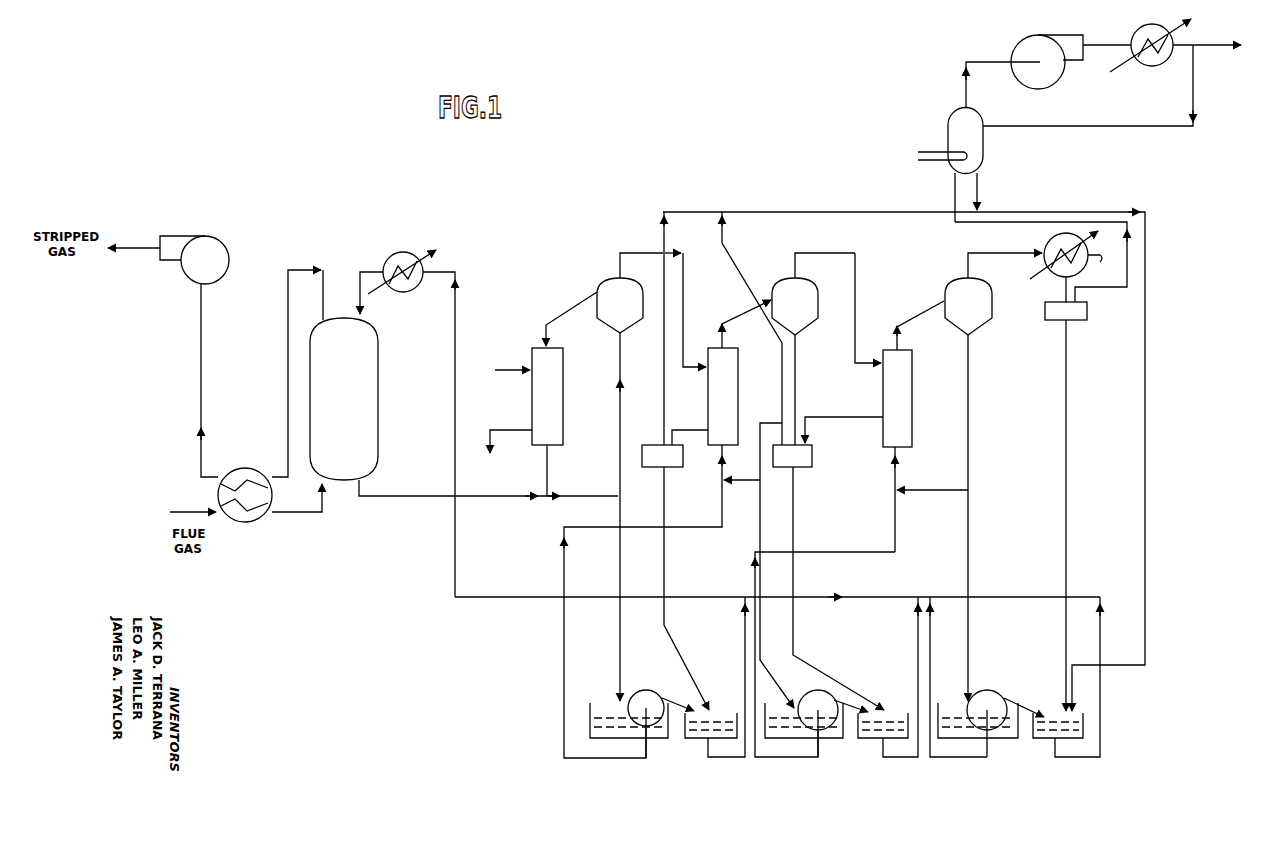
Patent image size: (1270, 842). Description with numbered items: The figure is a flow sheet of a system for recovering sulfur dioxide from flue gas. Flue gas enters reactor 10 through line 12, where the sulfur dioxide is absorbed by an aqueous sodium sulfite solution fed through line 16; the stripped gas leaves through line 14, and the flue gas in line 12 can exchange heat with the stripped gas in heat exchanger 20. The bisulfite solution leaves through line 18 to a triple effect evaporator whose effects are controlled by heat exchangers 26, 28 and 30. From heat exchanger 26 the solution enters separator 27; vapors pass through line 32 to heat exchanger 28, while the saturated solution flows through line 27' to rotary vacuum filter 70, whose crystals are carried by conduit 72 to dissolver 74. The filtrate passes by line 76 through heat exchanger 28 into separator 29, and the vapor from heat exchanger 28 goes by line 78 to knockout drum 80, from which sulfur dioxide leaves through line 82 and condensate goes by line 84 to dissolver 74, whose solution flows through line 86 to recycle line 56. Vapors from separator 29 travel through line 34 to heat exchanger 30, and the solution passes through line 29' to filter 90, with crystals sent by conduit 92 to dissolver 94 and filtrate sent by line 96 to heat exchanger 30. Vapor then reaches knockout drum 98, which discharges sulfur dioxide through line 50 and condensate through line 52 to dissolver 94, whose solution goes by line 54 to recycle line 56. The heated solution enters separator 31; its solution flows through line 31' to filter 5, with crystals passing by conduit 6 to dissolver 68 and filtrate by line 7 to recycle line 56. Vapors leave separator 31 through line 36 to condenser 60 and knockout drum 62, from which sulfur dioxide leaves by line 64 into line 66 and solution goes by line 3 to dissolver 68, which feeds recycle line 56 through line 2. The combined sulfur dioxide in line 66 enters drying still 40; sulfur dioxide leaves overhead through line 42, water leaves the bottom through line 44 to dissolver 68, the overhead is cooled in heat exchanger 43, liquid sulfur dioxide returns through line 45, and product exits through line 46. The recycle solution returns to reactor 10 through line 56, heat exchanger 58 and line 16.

The reactor 10 is at (378, 378).
The line 12 is at (304, 516).
The line 14 is at (288, 322).
The line 16 is at (360, 278).
The line 18 is at (360, 498).
The heat exchanger 20 is at (250, 468).
The heat exchanger 26 is at (563, 410).
The separator 27 is at (604, 303).
The line 27' is at (639, 517).
The heat exchanger 28 is at (738, 382).
The separator 29 is at (813, 303).
The line 29' is at (813, 390).
The heat exchanger 30 is at (912, 417).
The separator 31 is at (993, 294).
The line 31' is at (950, 518).
The line 32 is at (684, 311).
The line 34 is at (856, 308).
The line 36 is at (958, 254).
The drying still 40 is at (983, 140).
The line 42 is at (966, 90).
The heat exchanger 43 is at (1140, 26).
The line 44 is at (978, 192).
The line 45 is at (1082, 126).
The line 46 is at (1210, 44).
The line 50 is at (782, 400).
The line 52 is at (810, 668).
The line 54 is at (888, 760).
The recycle line 56 is at (886, 597).
The heat exchanger 58 is at (404, 252).
The condenser 60 is at (1074, 266).
The knockout drum 62 is at (1087, 316).
The line 64 is at (1127, 270).
The line 66 is at (856, 212).
The dissolver tank 68 is at (1052, 714).
The rotary vacuum filter 70 is at (628, 697).
The conduit 72 is at (672, 696).
The dissolver 74 is at (724, 710).
The line 76 is at (564, 670).
The line 78 is at (690, 430).
The knockout drum 80 is at (683, 458).
The line 82 is at (665, 404).
The line 84 is at (665, 504).
The line 86 is at (736, 760).
The rotary vacuum filter 90 is at (796, 704).
The conduit 92 is at (850, 694).
The dissolver 94 is at (896, 710).
The line 96 is at (798, 760).
The knockout drum 98 is at (812, 460).
The line 2 is at (1068, 760).
The line 3 is at (1067, 410).
The rotary vacuum filter 5 is at (990, 692).
The conduit 6 is at (1022, 700).
The line 7 is at (948, 760).